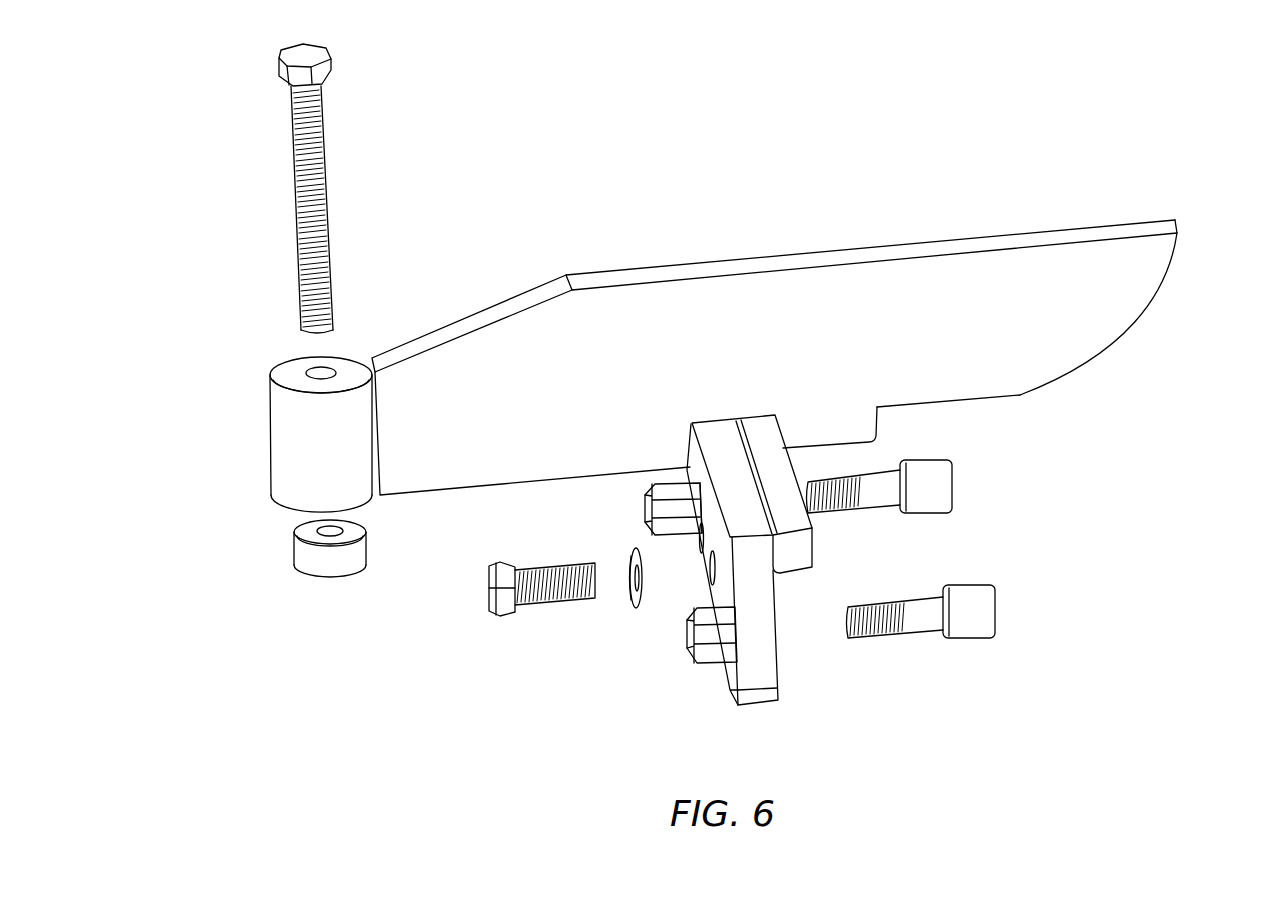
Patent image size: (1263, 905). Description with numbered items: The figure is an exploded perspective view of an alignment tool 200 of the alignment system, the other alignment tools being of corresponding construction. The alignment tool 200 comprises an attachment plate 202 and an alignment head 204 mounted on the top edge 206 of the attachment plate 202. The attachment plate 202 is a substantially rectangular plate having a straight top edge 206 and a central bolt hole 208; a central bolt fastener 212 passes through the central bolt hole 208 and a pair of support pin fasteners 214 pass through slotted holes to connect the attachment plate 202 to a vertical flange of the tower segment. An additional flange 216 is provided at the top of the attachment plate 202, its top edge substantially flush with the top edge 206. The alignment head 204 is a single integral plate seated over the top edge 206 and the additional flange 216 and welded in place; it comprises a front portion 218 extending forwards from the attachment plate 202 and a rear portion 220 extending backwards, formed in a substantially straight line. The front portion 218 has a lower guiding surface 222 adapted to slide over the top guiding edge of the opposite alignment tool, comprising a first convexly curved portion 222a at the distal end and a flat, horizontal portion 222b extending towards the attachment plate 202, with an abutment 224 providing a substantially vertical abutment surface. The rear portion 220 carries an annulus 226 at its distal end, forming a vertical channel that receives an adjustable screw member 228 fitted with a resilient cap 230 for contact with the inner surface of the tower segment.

The alignment tool 200 is at (647, 172).
The attachment plate 202 is at (752, 720).
The alignment head 204 is at (792, 250).
The top edge 206 is at (714, 430).
The central bolt hole 208 is at (702, 583).
The central bolt fastener 212 is at (553, 598).
The support pin fasteners 214 is at (932, 505).
The additional flange 216 is at (808, 548).
The front portion 218 is at (948, 272).
The rear portion 220 is at (483, 352).
The lower guiding surface 222 is at (1095, 340).
The first convexly curved portion 222a is at (1164, 278).
The flat, horizontal portion 222b is at (982, 407).
The abutment 224 is at (873, 413).
The annulus 226 is at (283, 442).
The adjustable screw member 228 is at (298, 212).
The resilient cap 230 is at (305, 558).